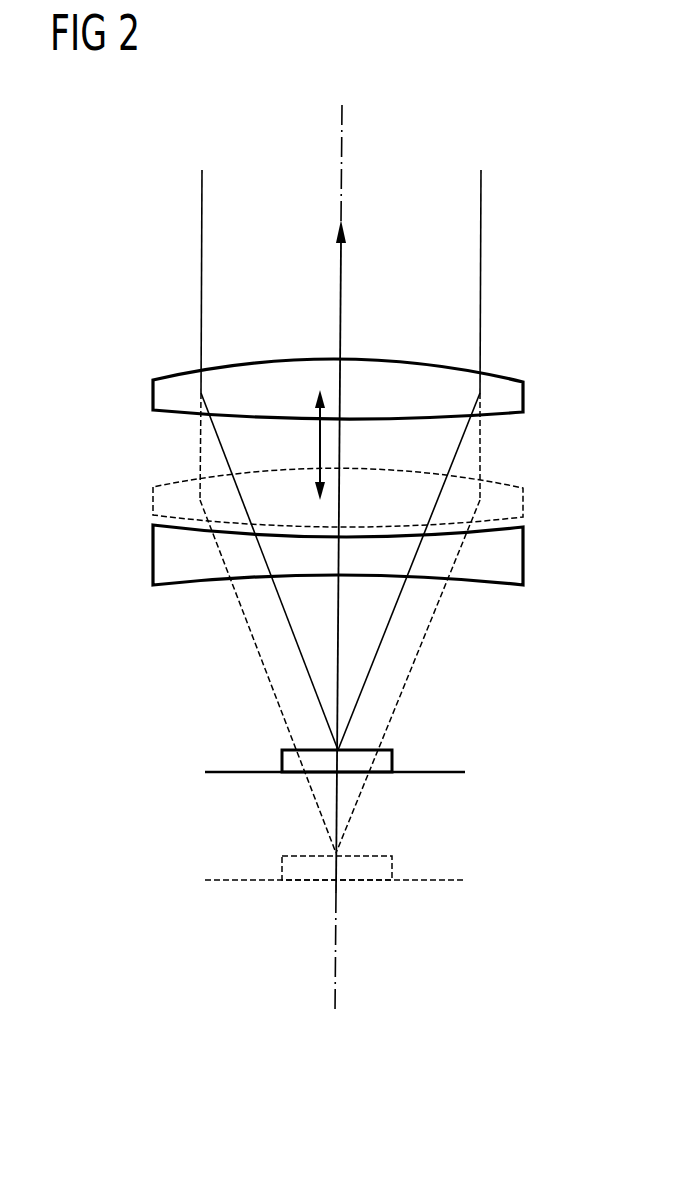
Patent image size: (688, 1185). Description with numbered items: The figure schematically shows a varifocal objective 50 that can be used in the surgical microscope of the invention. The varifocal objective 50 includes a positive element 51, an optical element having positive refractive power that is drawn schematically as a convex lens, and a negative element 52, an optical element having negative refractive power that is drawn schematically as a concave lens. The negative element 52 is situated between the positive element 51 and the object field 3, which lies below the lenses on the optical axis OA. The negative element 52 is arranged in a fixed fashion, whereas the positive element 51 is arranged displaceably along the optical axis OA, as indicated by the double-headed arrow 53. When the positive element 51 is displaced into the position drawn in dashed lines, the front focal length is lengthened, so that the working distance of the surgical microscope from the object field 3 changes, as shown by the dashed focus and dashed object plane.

The optical axis OA is at (342, 542).
The varifocal objective 50 is at (328, 474).
The positive element 51 is at (523, 393).
The negative element 52 is at (523, 550).
The double-headed arrow 53 is at (318, 447).
The object field 3 is at (392, 758).